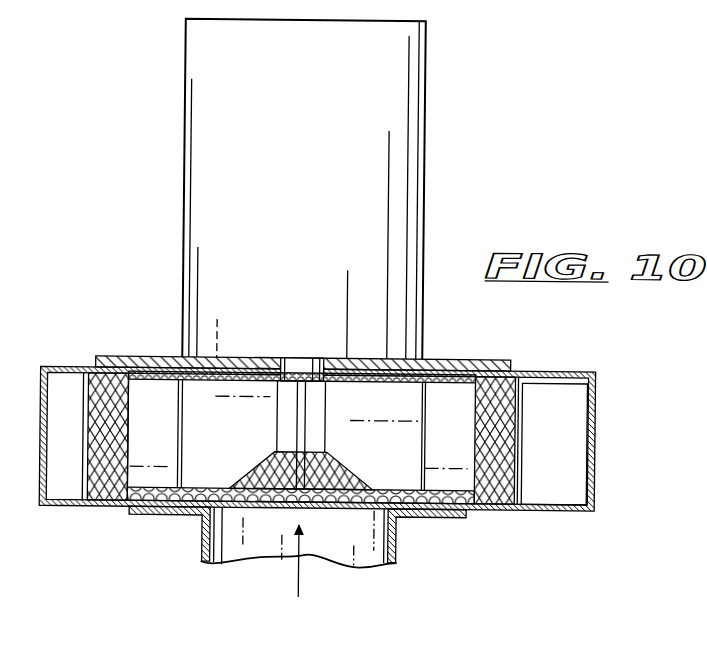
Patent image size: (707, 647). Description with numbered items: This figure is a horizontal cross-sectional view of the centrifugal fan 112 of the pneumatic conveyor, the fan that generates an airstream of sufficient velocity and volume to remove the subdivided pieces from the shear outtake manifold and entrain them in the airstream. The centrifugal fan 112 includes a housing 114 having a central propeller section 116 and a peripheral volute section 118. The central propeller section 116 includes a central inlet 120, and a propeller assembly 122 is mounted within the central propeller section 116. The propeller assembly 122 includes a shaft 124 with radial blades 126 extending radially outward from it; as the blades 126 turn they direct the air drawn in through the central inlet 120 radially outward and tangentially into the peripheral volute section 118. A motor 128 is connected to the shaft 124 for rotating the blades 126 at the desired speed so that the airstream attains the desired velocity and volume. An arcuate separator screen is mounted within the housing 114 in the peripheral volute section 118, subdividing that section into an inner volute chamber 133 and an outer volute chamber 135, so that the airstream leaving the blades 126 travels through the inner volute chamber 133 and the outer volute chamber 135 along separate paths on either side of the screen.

The centrifugal fan 112 is at (62, 258).
The housing 114 is at (82, 518).
The central propeller section 116 is at (237, 360).
The peripheral volute section 118 is at (575, 371).
The central inlet 120 is at (384, 520).
The propeller assembly 122 is at (408, 402).
The shaft 124 is at (294, 360).
The radial blades 126 is at (242, 455).
The motor 128 is at (320, 147).
The inner volute chamber 133 is at (510, 509).
The outer volute chamber 135 is at (575, 455).